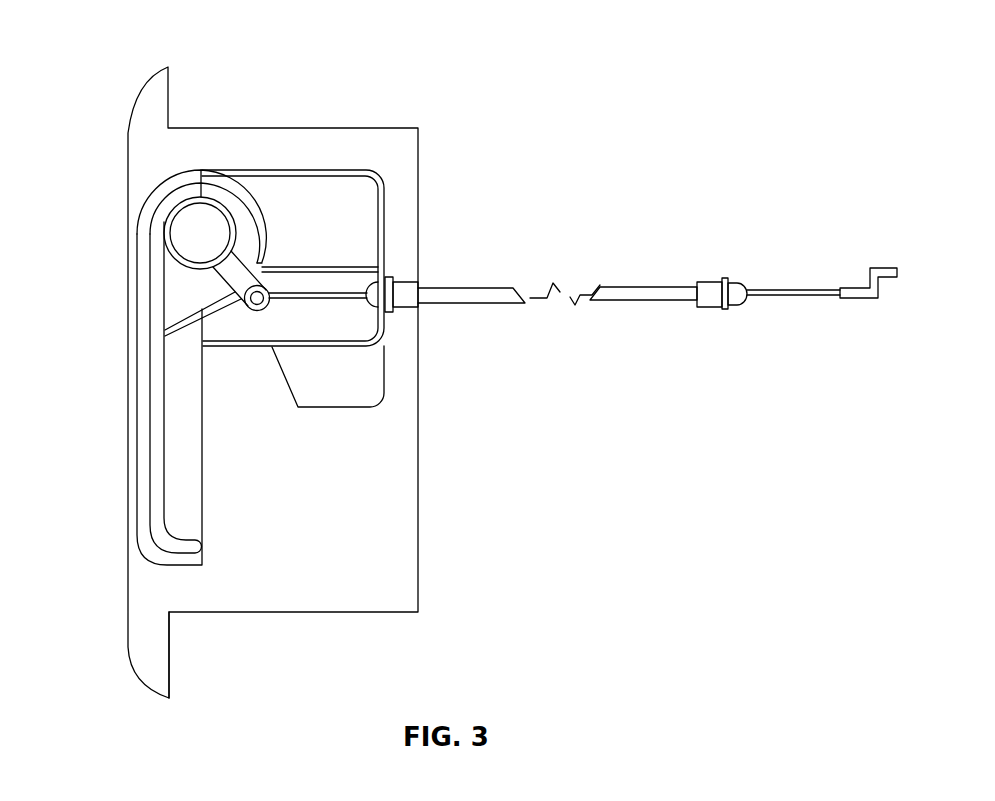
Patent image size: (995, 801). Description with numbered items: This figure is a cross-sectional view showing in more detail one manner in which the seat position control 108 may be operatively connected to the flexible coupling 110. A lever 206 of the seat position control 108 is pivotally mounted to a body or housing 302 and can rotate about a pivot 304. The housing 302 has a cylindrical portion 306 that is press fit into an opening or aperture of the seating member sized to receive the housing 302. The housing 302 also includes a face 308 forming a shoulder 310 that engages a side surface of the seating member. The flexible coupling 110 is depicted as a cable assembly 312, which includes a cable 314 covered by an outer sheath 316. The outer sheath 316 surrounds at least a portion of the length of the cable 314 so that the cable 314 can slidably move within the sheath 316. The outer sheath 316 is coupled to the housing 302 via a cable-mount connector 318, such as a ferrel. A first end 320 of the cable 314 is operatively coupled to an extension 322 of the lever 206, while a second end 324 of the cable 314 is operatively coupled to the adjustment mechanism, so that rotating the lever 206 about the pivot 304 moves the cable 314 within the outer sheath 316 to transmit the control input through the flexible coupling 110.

The seat position control 108 is at (252, 50).
The flexible coupling 110 is at (580, 195).
The lever 206 is at (147, 470).
The housing 302 is at (145, 87).
The pivot 304 is at (200, 233).
The cylindrical portion 306 is at (322, 128).
The face 308 is at (126, 178).
The shoulder 310 is at (170, 667).
The cable assembly 312 is at (566, 270).
The cable 314 is at (530, 300).
The outer sheath 316 is at (640, 300).
The cable-mount connector 318 is at (403, 308).
The first end 320 is at (277, 313).
The extension 322 is at (243, 282).
The second end 324 is at (793, 297).